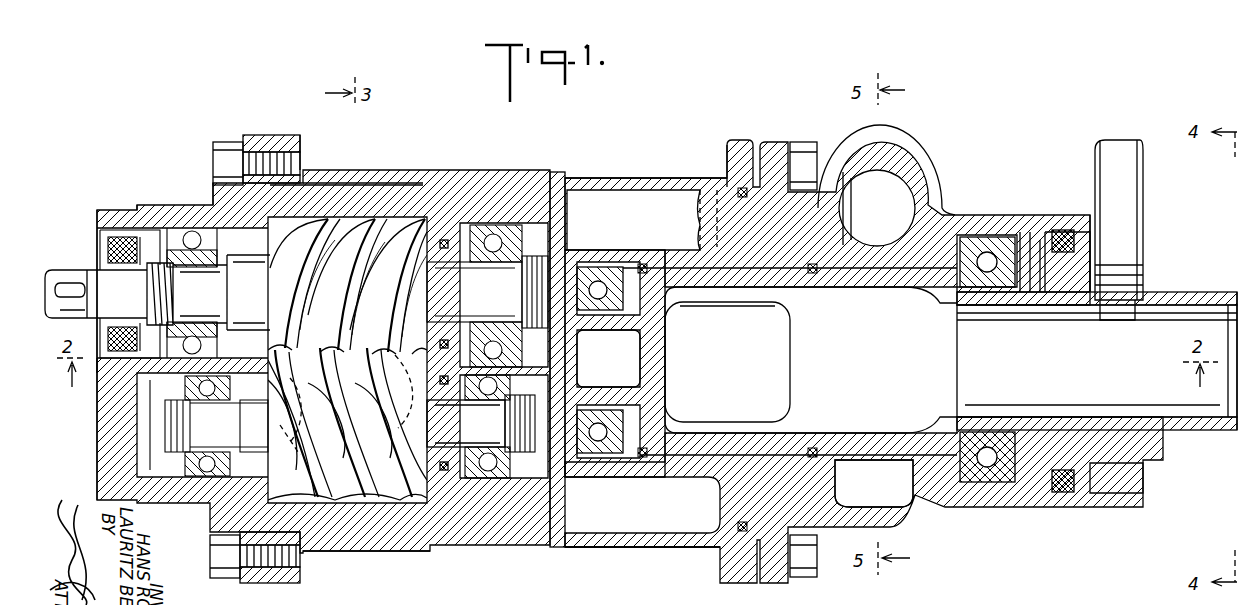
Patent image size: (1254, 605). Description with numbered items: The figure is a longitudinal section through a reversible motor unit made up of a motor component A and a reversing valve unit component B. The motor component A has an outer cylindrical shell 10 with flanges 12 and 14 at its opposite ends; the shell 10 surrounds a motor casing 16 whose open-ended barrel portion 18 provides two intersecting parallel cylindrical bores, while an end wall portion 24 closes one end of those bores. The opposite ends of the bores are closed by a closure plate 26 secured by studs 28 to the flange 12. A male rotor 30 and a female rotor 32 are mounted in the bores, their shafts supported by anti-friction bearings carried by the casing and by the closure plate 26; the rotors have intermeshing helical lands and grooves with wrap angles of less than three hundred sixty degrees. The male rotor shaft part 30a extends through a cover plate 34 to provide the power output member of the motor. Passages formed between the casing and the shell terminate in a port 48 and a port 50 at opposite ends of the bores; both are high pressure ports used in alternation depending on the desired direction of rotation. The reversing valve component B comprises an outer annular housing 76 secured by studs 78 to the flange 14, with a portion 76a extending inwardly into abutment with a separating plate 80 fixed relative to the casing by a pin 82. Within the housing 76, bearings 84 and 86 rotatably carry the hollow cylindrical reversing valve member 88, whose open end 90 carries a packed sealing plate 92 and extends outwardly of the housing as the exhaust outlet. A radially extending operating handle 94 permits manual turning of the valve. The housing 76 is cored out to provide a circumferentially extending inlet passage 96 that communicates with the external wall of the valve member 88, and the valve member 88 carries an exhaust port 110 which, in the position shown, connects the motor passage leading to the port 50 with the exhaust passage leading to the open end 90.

The outer cylindrical shell 10 is at (385, 180).
The flange 12 is at (297, 137).
The flange 14 is at (740, 145).
The motor casing 16 is at (460, 505).
The barrel portion 18 is at (315, 197).
The end wall portion 24 is at (443, 237).
The closure plate 26 is at (213, 200).
The studs 28 is at (225, 162).
The male rotor 30 is at (323, 227).
The male rotor shaft part 30a is at (60, 270).
The female rotor 32 is at (333, 493).
The cover plate 34 is at (97, 435).
The port 48 is at (422, 425).
The port 50 is at (280, 430).
The annular valve housing 76 is at (1000, 240).
The inwardly extending portion of valve housing 76a is at (607, 255).
The studs 78 is at (803, 147).
The separating plate 80 is at (560, 200).
The pin 82 is at (560, 512).
The bearing 84 is at (598, 425).
The bearing 86 is at (1000, 287).
The hollow cylindrical reversing valve member 88 is at (897, 360).
The open end of valve member 90 is at (1175, 312).
The sealing plate 92 is at (1062, 240).
The operating handle 94 is at (1145, 150).
The inlet passage 96 is at (897, 492).
The exhaust port 110 is at (768, 352).
The motor component A is at (491, 194).
The reversing valve unit component B is at (951, 228).